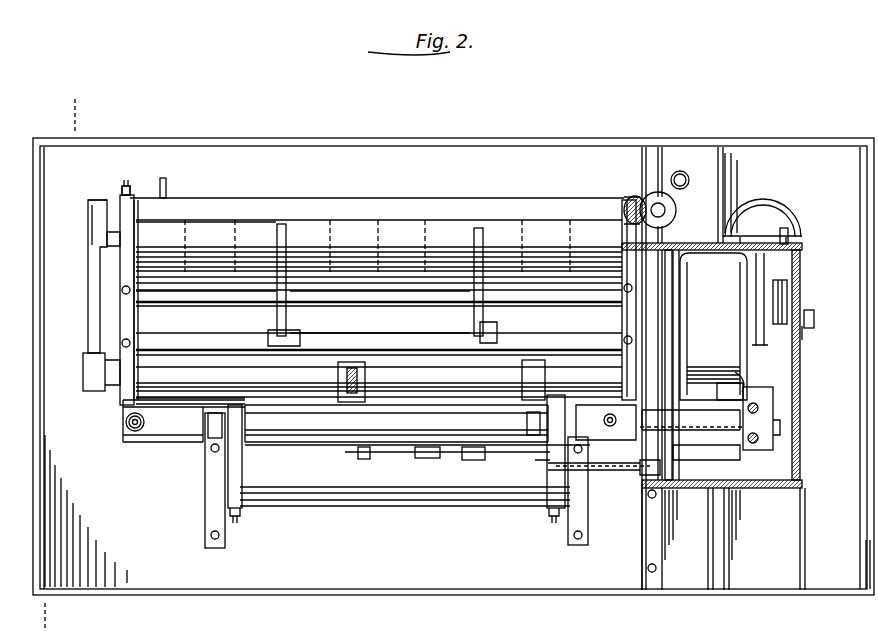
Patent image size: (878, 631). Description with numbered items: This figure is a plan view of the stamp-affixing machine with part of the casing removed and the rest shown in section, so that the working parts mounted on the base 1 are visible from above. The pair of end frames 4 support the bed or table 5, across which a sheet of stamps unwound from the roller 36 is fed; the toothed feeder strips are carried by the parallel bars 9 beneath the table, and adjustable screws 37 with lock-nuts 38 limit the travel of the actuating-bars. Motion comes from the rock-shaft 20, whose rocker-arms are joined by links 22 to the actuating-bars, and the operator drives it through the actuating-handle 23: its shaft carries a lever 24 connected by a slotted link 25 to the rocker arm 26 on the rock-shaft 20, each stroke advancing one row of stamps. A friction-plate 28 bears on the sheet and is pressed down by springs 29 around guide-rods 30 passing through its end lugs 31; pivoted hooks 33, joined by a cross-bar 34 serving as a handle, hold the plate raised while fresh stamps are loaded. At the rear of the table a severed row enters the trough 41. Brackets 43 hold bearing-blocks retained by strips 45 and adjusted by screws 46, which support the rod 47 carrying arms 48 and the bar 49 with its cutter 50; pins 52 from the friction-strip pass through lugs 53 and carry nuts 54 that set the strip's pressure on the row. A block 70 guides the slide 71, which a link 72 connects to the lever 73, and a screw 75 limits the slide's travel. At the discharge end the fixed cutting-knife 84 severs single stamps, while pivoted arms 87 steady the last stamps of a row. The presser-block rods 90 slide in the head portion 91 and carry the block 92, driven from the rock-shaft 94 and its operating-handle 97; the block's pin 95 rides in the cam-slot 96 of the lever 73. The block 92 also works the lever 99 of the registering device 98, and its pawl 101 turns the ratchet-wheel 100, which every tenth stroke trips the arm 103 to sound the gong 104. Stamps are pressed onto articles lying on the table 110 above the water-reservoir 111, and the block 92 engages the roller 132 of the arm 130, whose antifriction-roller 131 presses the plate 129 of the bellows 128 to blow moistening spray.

The base 1 is at (222, 156).
The parallel bars 9 is at (63, 354).
The end frames 4 is at (128, 324).
The bed or table 5 is at (352, 204).
The rock-shaft 20 is at (108, 240).
The links 22 is at (496, 373).
The actuating-handle 23 is at (366, 380).
The lever 24 is at (90, 355).
The slotted link 25 is at (90, 300).
The rocker arm 26 is at (92, 200).
The friction-plate 28 is at (380, 322).
The springs 29 is at (122, 344).
The guide-rods 30 is at (126, 296).
The end lugs 31 is at (140, 306).
The hooks 33 is at (282, 225).
The cross-bar 34 is at (396, 290).
The roller 36 is at (206, 235).
The adjustable screws 37 is at (128, 190).
The lock-nuts 38 is at (135, 200).
The stamp receiving and guiding trough 41 is at (162, 438).
The brackets 43 is at (212, 506).
The strips 45 is at (208, 452).
The screws 46 is at (572, 545).
The rod 47 is at (412, 497).
The arms 48 is at (240, 467).
The bar 49 is at (417, 425).
The cutter 50 is at (150, 398).
The pins 52 is at (128, 424).
The lugs 53 is at (130, 437).
The nuts 54 is at (126, 420).
The block 70 is at (480, 460).
The slide 71 is at (428, 458).
The link 72 is at (618, 470).
The lever 73 is at (640, 478).
The screw 75 is at (352, 458).
The cutting-knife 84 is at (702, 490).
The pivoted arms 87 is at (690, 396).
The rods 90 is at (760, 440).
The head portion 91 is at (785, 539).
The block 92 is at (775, 397).
The rock-shaft 94 is at (668, 242).
The projecting pin 95 is at (735, 462).
The curved cam-slot 96 is at (722, 490).
The operating-handle 97 is at (676, 207).
The registering device 98 is at (806, 327).
The lever 99 is at (760, 350).
The ratchet-wheel 100 is at (789, 292).
The spring-pressed pawl 101 is at (800, 378).
The spring-held arm 103 is at (800, 240).
The gong or alarm 104 is at (840, 185).
The bed or table 110 is at (778, 558).
The water-reservoir 111 is at (684, 146).
The bellows 128 is at (713, 326).
The plate 129 is at (738, 300).
The arm 130 is at (738, 320).
The antifriction-roller 131 is at (735, 385).
The roller 132 is at (770, 424).